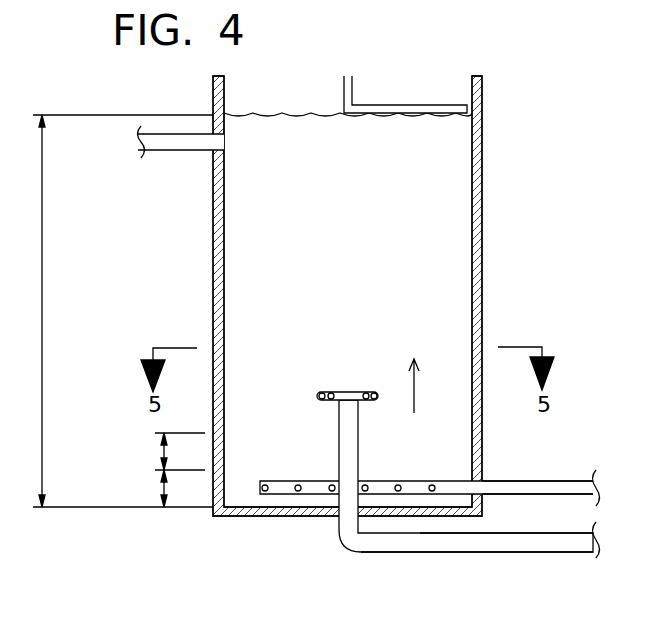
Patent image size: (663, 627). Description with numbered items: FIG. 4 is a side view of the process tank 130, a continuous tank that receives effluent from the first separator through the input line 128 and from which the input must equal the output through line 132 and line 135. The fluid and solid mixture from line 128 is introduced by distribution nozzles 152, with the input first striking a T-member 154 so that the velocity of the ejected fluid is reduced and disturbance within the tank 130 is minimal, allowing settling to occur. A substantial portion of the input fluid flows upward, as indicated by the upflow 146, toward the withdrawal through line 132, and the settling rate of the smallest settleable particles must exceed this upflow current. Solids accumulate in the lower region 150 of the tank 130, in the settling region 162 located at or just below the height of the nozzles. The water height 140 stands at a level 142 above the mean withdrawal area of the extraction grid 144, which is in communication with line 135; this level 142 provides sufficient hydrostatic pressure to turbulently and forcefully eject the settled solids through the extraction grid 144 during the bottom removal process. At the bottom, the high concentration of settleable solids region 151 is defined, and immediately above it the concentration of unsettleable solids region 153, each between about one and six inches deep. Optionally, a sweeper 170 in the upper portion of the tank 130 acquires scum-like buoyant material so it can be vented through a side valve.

The input line 128 is at (533, 546).
The process tank 130 is at (213, 247).
The line 132 is at (168, 150).
The line 135 is at (563, 485).
The water height 140 is at (433, 117).
The level 142 is at (120, 311).
The extraction grid 144 is at (415, 485).
The upflow 146 is at (413, 387).
The lower region 150 is at (435, 440).
The high concentration of settleable solids region 151 is at (160, 489).
The distribution nozzles 152 is at (314, 379).
The concentration of unsettleable solids region 153 is at (160, 452).
The T-member 154 is at (341, 392).
The settling region 162 is at (265, 464).
The sweeper 170 is at (428, 105).